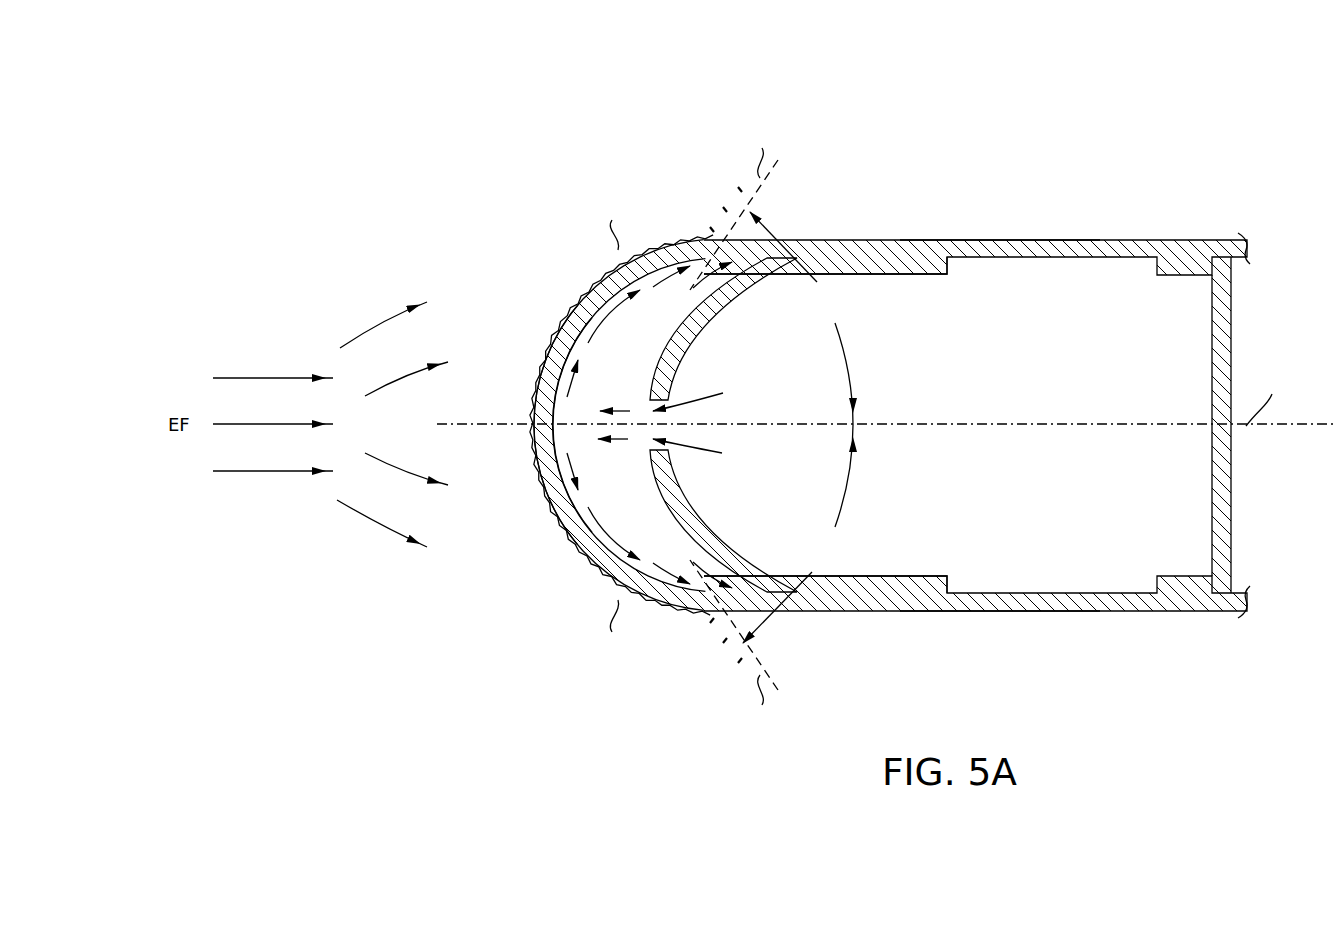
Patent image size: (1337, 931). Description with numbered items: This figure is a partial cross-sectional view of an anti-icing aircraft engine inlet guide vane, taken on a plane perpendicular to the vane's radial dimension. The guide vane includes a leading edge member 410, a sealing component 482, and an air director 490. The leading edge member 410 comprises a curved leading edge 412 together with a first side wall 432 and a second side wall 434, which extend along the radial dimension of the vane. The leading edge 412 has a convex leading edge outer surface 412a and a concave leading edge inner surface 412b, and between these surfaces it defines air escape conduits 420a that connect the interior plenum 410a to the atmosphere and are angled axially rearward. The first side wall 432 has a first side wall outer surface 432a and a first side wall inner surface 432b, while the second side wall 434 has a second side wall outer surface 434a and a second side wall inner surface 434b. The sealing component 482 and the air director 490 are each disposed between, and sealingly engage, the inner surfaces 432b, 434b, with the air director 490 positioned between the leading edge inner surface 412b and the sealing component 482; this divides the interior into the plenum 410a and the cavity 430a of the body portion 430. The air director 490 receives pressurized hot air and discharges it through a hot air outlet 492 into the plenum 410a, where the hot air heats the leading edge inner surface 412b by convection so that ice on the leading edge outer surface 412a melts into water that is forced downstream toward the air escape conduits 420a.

The leading edge member 410 is at (608, 130).
The plenum 410a is at (662, 352).
The leading edge 412 is at (545, 355).
The leading edge outer surface 412a is at (540, 388).
The leading edge inner surface 412b is at (592, 425).
The air escape conduits 420a is at (701, 239).
The cylindrical body 430 is at (1073, 170).
The cavity 430a is at (928, 462).
The first side wall 432 is at (1249, 250).
The first side wall outer surface 432a is at (983, 240).
The first side wall inner surface 432b is at (990, 276).
The second side wall 434 is at (1249, 600).
The second side wall outer surface 434a is at (983, 614).
The second side wall inner surface 434b is at (988, 590).
The sealing component 482 is at (1232, 486).
The air director 490 is at (722, 306).
The hot air outlet 492 is at (672, 452).